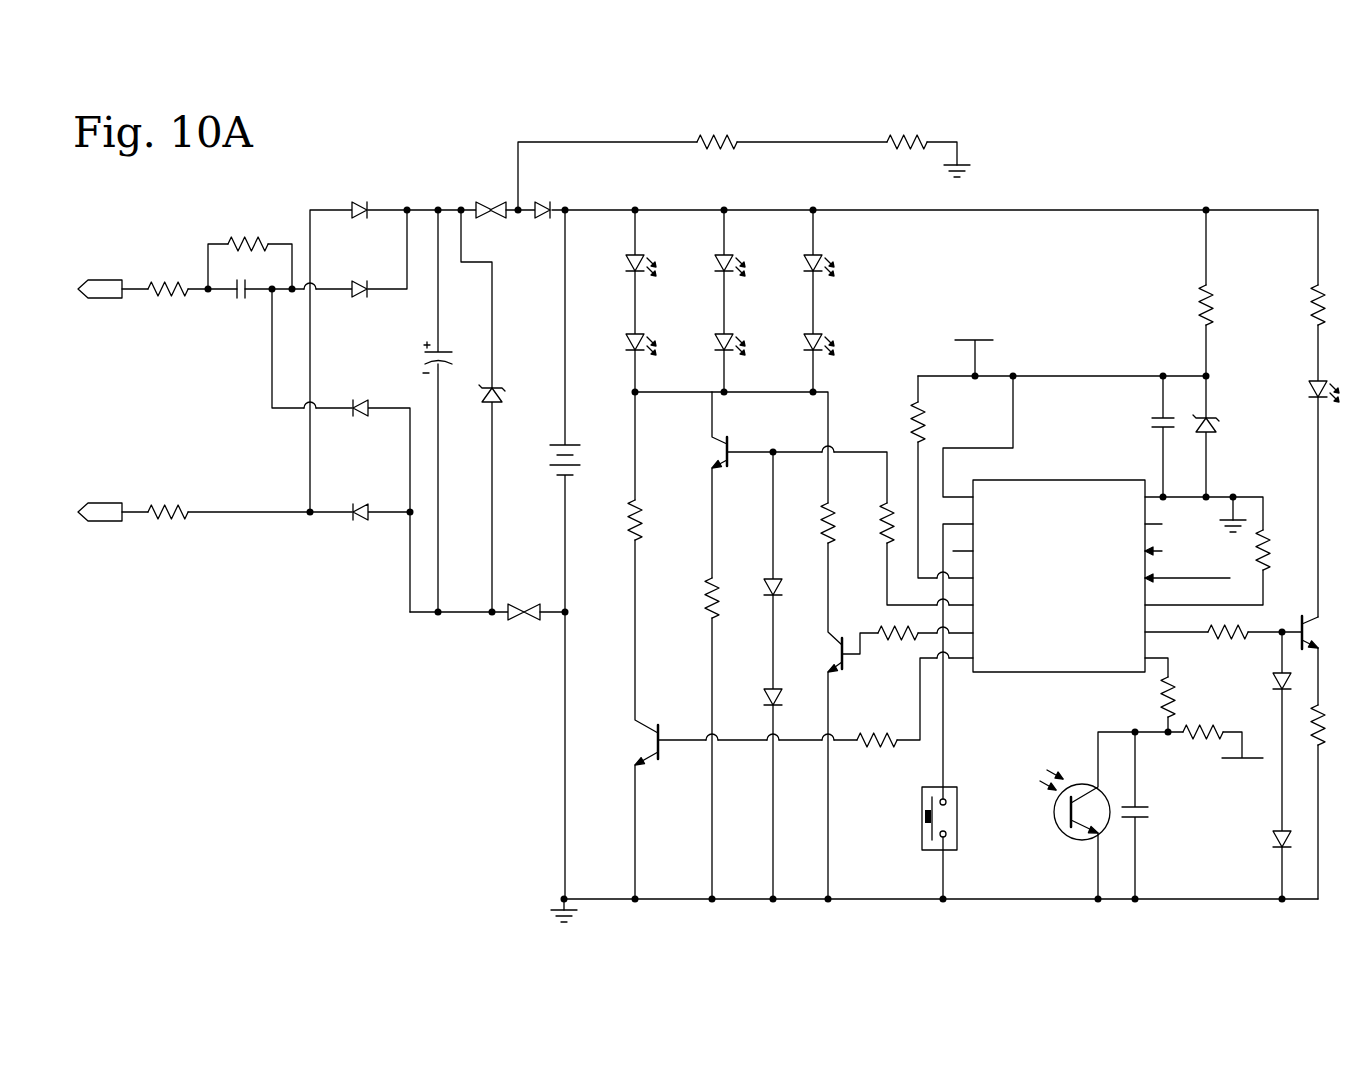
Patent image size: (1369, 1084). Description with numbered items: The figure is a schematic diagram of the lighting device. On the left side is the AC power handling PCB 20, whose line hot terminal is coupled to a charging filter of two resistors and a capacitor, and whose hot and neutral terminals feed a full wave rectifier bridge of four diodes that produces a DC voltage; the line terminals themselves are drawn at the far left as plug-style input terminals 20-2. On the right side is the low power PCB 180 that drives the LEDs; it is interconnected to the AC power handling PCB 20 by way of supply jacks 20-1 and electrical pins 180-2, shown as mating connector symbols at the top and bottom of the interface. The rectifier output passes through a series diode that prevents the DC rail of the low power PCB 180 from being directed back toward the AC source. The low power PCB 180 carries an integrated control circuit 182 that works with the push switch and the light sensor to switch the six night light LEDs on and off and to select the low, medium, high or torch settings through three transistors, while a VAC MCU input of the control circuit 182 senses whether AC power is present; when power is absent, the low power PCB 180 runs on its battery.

The AC power handling PCB 20 is at (312, 395).
The supply jacks 20-1 is at (481, 200).
The input terminal plug 20-2 is at (104, 284).
The low power PCB 180 is at (882, 515).
The electrical pins 180-2 is at (498, 200).
The integrated control circuit 182 is at (1087, 479).